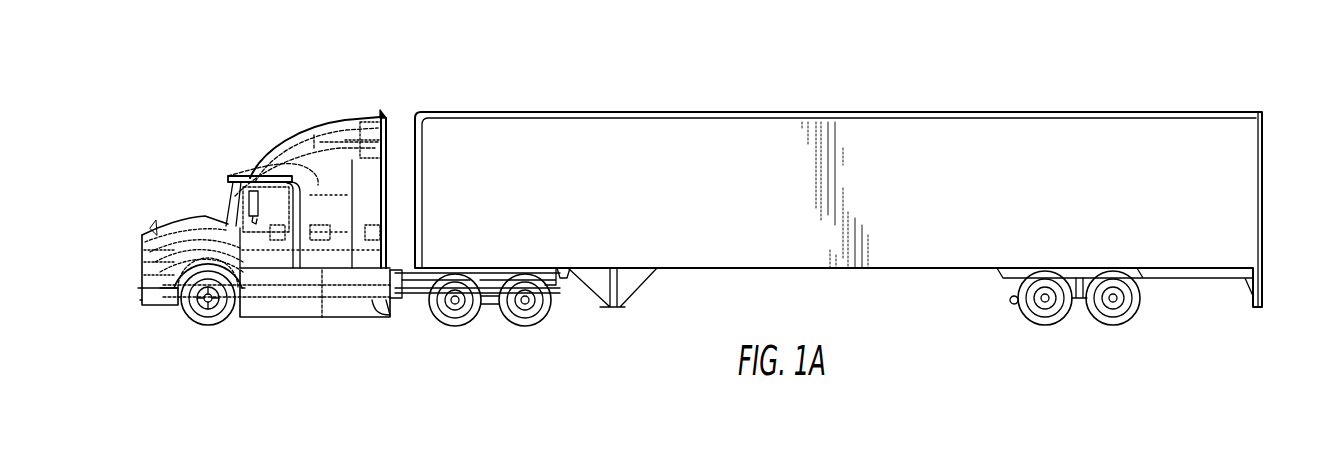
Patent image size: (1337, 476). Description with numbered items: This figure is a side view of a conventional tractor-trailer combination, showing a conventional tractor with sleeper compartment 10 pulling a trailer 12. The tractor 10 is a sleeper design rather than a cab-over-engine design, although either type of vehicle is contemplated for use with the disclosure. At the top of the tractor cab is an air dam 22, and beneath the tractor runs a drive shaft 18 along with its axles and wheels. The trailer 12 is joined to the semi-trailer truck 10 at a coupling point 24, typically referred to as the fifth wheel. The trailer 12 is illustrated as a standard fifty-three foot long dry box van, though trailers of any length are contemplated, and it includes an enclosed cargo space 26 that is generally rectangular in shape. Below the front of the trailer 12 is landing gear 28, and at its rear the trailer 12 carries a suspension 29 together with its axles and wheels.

The tractor with sleeper compartment 10 is at (350, 225).
The trailer 12 is at (863, 207).
The air dam 22 is at (277, 152).
The drive shaft 18 is at (415, 300).
The coupling point 24 is at (492, 300).
The landing gear 28 is at (613, 310).
The suspension 29 is at (1080, 300).
The enclosed cargo space 26 is at (1237, 185).